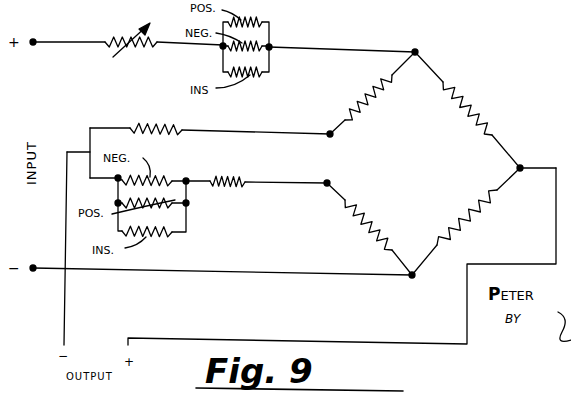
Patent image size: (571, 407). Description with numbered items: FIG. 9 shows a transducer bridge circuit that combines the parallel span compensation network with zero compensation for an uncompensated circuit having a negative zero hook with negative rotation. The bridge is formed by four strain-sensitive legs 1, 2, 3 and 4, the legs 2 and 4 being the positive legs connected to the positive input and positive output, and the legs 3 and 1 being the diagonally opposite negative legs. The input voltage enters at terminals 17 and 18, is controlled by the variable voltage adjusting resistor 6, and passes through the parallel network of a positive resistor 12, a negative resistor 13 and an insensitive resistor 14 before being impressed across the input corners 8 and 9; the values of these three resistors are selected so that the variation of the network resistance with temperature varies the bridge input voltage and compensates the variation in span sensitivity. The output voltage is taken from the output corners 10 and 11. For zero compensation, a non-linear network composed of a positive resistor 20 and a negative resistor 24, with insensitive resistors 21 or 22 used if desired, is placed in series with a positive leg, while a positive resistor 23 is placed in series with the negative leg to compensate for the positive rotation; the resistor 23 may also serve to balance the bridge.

The bridge leg 1 is at (360, 102).
The bridge leg 2 is at (468, 106).
The bridge leg 3 is at (472, 210).
The bridge leg 4 is at (358, 209).
The variable resistor 6 is at (114, 40).
The input corner 8 is at (422, 46).
The input corner 9 is at (412, 277).
The output corner 10 is at (520, 168).
The output corner 11 is at (87, 151).
The positive resistor 12 is at (265, 21).
The negative resistor 13 is at (258, 44).
The insensitive resistor 14 is at (252, 78).
The positive input terminal 17 is at (33, 42).
The negative input terminal 18 is at (33, 268).
The positive resistor 20 is at (188, 203).
The insensitive resistor 21 is at (160, 237).
The insensitive resistor 22 is at (228, 180).
The positive resistor 23 is at (176, 126).
The negative resistor 24 is at (152, 176).